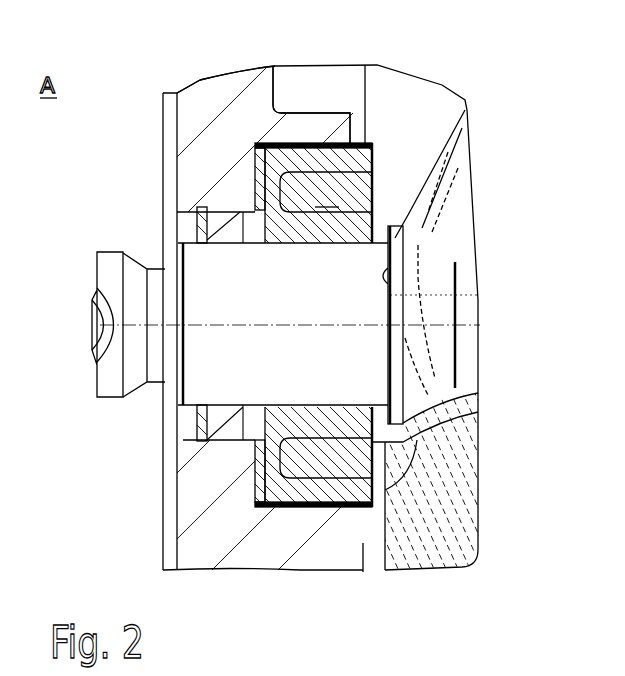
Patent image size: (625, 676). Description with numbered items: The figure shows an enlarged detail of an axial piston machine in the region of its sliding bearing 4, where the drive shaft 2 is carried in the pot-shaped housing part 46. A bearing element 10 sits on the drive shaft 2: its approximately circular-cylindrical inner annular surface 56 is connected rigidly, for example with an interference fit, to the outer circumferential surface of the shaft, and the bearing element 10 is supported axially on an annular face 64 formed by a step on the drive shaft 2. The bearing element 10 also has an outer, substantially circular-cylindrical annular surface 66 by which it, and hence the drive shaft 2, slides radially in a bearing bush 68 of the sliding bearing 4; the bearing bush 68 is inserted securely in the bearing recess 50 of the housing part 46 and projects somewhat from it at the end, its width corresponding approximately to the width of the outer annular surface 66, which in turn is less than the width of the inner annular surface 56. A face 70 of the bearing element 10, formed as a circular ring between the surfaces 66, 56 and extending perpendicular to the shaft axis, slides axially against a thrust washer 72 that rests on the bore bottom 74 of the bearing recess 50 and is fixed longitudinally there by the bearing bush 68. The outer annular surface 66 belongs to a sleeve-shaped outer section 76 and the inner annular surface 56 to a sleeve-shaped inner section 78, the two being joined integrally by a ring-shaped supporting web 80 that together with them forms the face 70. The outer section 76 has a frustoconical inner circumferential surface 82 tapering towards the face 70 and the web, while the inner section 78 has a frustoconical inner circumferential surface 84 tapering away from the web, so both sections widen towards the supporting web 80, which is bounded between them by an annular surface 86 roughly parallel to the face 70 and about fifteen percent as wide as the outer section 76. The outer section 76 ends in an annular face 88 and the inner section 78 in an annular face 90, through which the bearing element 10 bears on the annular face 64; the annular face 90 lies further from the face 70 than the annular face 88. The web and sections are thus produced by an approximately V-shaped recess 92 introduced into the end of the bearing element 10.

The drive shaft 2 is at (210, 285).
The sliding bearing 4 is at (205, 115).
The bearing element 10 is at (255, 462).
The pot-shaped housing part 46 is at (197, 547).
The bearing recess 50 is at (308, 507).
The inner annular surface 56 is at (350, 405).
The annular face 64 is at (395, 276).
The outer annular surface 66 is at (351, 113).
The bearing bush 68 is at (292, 142).
The face 70 is at (256, 442).
The thrust washer 72 is at (263, 183).
The bore bottom 74 is at (257, 203).
The outer section 76 is at (378, 153).
The inner section 78 is at (385, 445).
The supporting web 80 is at (277, 465).
The inner circumferential surface 82 is at (373, 183).
The inner circumferential surface 84 is at (372, 210).
The annular surface 86 is at (263, 197).
The annular face 88 is at (385, 493).
The annular face 90 is at (405, 240).
The recess 92 is at (326, 192).